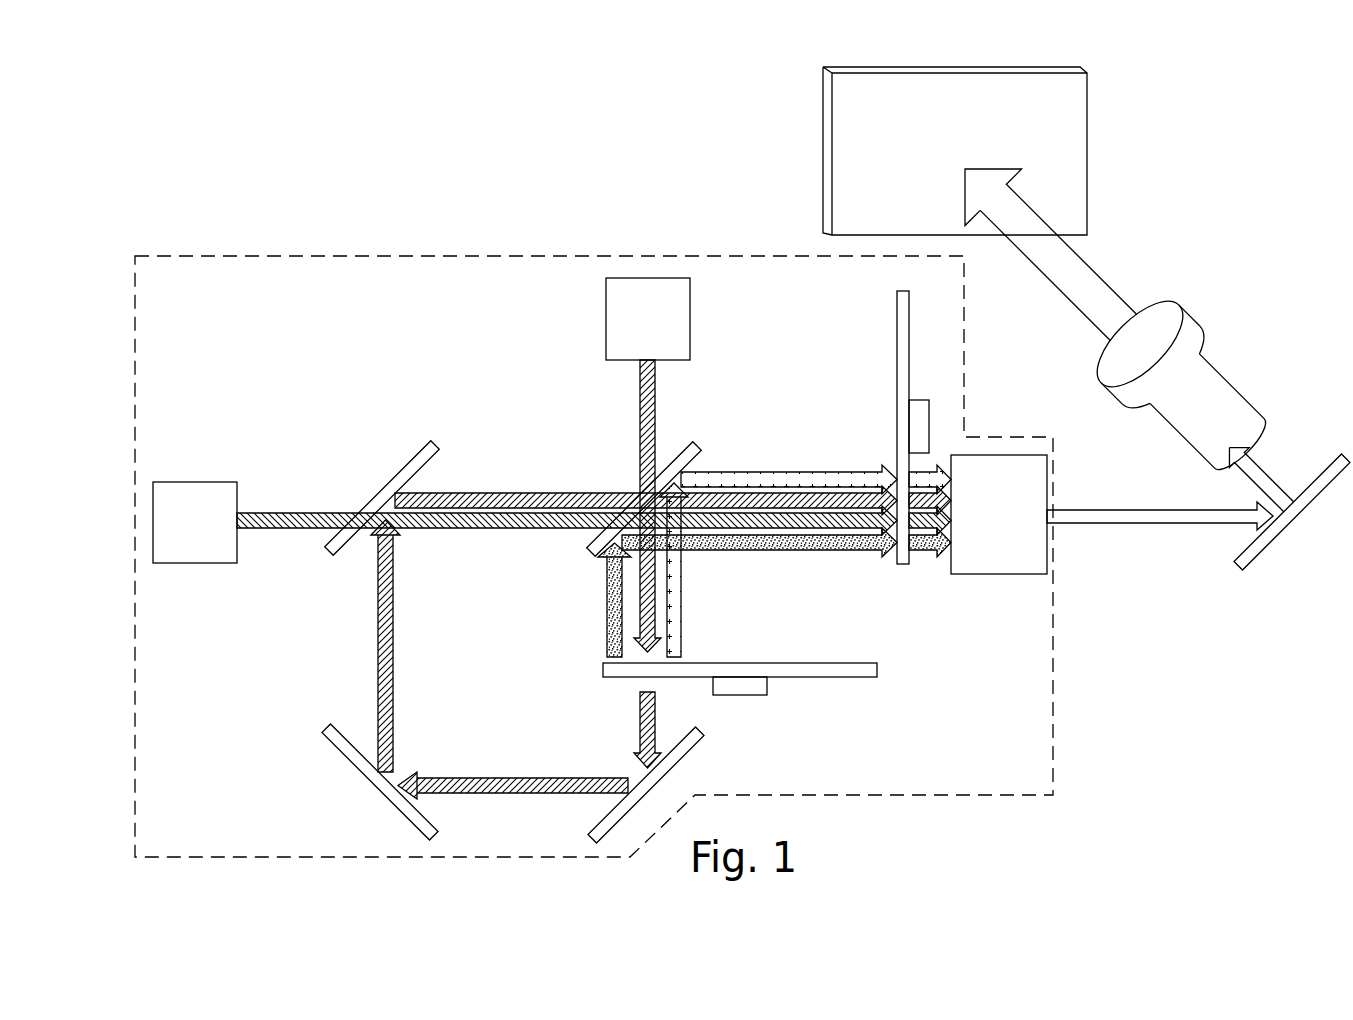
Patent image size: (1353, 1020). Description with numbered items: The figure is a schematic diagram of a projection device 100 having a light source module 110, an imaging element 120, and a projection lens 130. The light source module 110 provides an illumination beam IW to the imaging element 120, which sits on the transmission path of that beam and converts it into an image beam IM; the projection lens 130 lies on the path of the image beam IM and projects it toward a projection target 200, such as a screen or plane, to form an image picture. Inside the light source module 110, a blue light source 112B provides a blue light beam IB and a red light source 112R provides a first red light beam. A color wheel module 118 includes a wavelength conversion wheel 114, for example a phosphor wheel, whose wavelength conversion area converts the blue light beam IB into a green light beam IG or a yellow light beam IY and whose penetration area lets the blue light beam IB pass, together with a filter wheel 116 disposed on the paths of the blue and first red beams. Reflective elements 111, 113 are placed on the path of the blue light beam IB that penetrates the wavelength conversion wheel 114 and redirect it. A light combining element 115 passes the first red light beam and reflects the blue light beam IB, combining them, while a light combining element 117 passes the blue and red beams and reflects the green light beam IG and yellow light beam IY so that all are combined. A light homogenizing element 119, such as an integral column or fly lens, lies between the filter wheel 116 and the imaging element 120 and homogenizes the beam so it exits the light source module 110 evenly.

The projection device 100 is at (1239, 779).
The light source module 110 is at (240, 255).
The reflective element 111 is at (703, 754).
The blue light source 112B is at (650, 278).
The red light source 112R is at (197, 482).
The reflective element 113 is at (356, 776).
The wavelength conversion wheel 114 is at (836, 678).
The light combining element 115 is at (408, 458).
The filter wheel 116 is at (897, 328).
The light combining element 117 is at (682, 456).
The color wheel module 118 is at (989, 711).
The light homogenizing element 119 is at (973, 575).
The imaging element 120 is at (1290, 543).
The projection lens 130 is at (1223, 373).
The projection target 200 is at (1088, 155).
The blue light beam IB is at (640, 405).
The green light beam IG is at (606, 611).
The yellow light beam IY is at (681, 612).
The illumination beam IW is at (1148, 528).
The image beam IM is at (1273, 473).